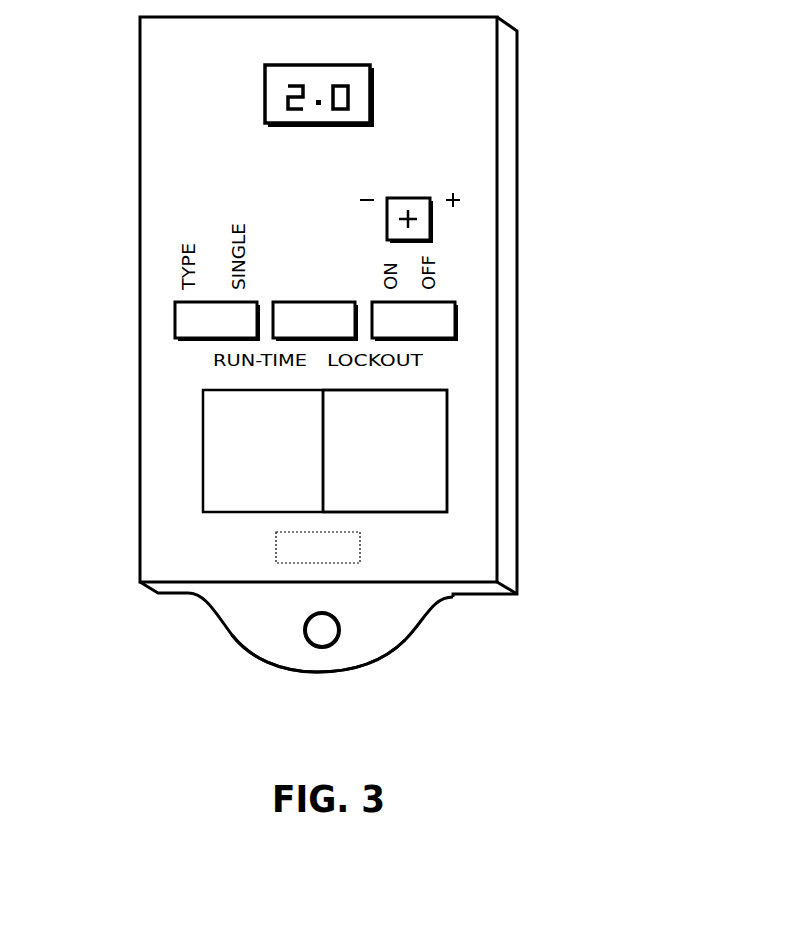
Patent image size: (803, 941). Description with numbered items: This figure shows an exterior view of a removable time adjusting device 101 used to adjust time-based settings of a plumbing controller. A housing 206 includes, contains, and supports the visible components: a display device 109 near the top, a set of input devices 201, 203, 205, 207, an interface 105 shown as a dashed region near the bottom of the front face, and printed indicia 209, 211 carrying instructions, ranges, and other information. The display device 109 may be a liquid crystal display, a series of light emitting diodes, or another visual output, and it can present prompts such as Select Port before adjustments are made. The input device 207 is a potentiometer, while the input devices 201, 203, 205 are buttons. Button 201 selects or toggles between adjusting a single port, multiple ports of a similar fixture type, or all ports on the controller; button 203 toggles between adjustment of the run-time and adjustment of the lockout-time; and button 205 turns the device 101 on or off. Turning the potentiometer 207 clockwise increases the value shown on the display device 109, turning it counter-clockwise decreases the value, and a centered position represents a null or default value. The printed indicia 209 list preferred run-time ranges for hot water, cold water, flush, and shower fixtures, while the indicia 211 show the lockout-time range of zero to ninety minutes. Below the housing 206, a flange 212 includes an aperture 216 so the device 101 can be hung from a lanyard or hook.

The removable time adjusting device 101 is at (379, 366).
The interface 105 is at (276, 556).
The display device 109 is at (372, 82).
The input device 201 is at (197, 331).
The input device 203 is at (295, 331).
The input device 205 is at (394, 331).
The housing 206 is at (435, 130).
The input device 207 is at (432, 215).
The printed indicia 209 is at (222, 508).
The printed indicia 211 is at (438, 423).
The flange 212 is at (280, 648).
The aperture 216 is at (322, 630).